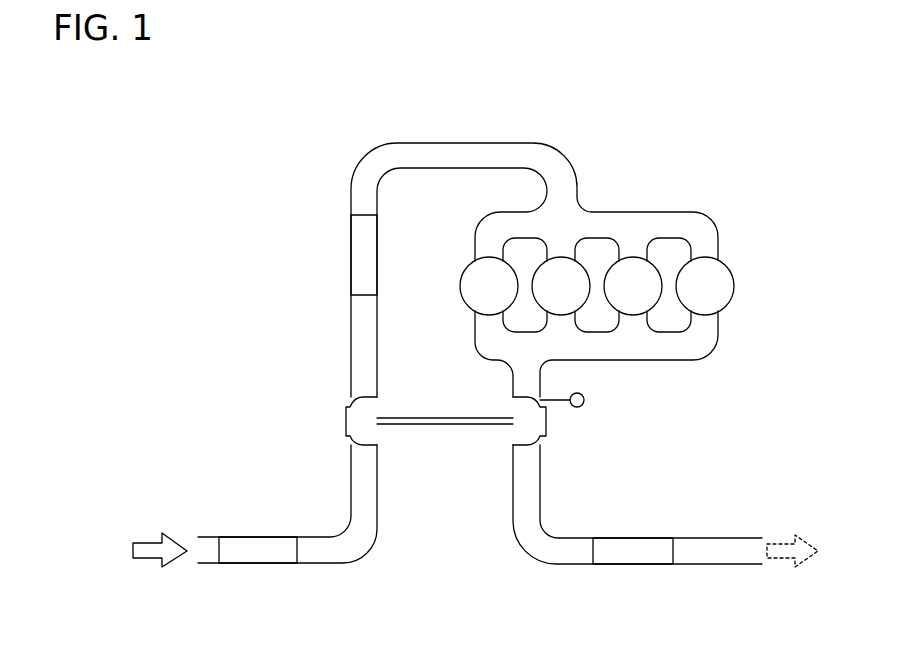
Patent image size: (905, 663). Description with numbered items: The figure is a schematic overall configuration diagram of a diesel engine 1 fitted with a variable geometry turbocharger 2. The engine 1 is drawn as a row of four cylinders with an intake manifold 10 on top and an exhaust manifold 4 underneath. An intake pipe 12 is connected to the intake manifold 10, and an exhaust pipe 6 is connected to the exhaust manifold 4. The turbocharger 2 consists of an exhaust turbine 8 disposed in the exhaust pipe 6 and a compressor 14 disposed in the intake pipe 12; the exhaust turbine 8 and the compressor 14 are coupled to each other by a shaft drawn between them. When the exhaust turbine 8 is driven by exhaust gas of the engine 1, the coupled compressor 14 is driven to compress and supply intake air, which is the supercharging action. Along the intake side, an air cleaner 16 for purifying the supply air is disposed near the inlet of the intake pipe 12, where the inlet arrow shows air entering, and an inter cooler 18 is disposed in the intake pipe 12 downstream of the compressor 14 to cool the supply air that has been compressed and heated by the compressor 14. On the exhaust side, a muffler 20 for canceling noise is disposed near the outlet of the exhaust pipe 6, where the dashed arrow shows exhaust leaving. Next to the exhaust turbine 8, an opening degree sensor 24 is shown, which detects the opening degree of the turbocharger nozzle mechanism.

The engine 1 is at (712, 120).
The turbocharger 2 is at (441, 457).
The exhaust manifold 4 is at (683, 362).
The exhaust pipe 6 is at (542, 493).
The exhaust turbine 8 is at (531, 422).
The intake manifold 10 is at (642, 212).
The intake pipe 12 is at (448, 143).
The compressor 14 is at (362, 425).
The air cleaner 16 is at (258, 555).
The inter cooler 18 is at (362, 262).
The muffler 20 is at (634, 552).
The opening degree sensor 24 is at (585, 398).